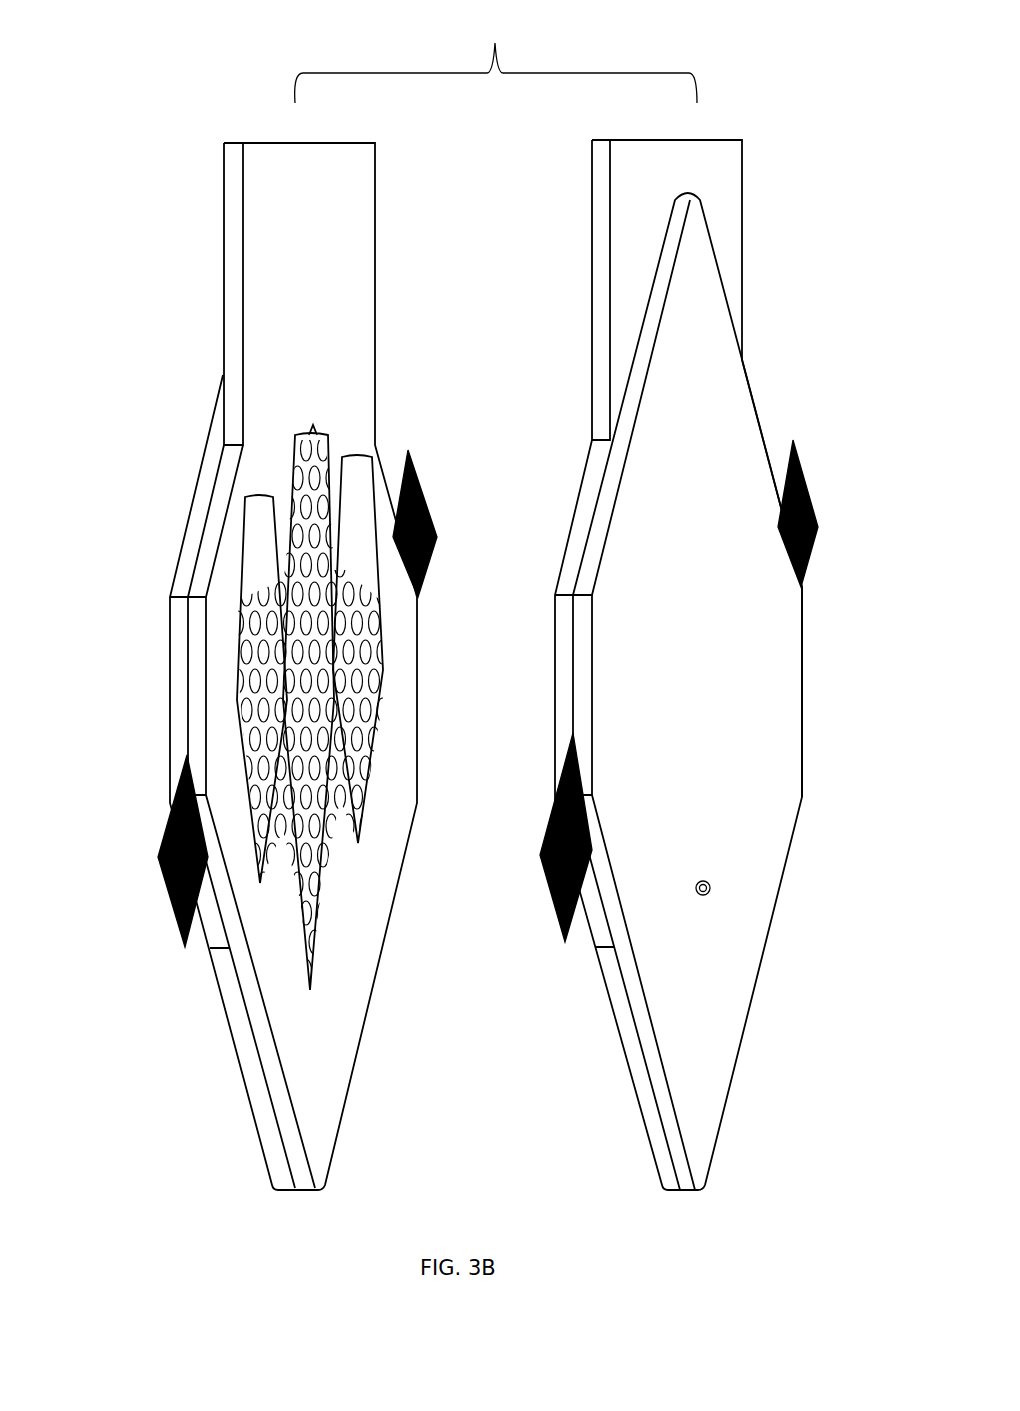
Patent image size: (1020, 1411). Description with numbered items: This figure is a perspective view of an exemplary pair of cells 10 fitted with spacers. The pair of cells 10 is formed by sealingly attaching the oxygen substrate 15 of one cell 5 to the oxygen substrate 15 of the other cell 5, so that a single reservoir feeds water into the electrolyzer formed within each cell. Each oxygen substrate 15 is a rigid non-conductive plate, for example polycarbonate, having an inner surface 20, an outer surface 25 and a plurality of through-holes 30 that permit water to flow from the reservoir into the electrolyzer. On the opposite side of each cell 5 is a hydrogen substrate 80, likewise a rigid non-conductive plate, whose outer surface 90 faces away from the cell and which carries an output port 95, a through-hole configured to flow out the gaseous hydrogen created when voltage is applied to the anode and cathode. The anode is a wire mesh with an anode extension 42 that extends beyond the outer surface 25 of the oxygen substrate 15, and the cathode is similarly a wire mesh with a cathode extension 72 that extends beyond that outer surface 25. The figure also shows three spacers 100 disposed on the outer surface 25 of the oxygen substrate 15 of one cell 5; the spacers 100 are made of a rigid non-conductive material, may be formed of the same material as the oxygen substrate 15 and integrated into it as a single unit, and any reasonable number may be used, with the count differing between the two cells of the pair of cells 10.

The pair of cells 10 is at (508, 32).
The cell 5 is at (322, 112).
The oxygen substrate 15 is at (375, 318).
The inner surface 20 is at (316, 268).
The outer surface 25 is at (714, 180).
The hydrogen substrate 80 is at (205, 483).
The cathode extension 72 is at (420, 488).
The anode extension 42 is at (175, 912).
The spacer 100 is at (255, 565).
The through-holes 30 is at (285, 805).
The outer surface 90 is at (728, 724).
The output port 95 is at (706, 894).